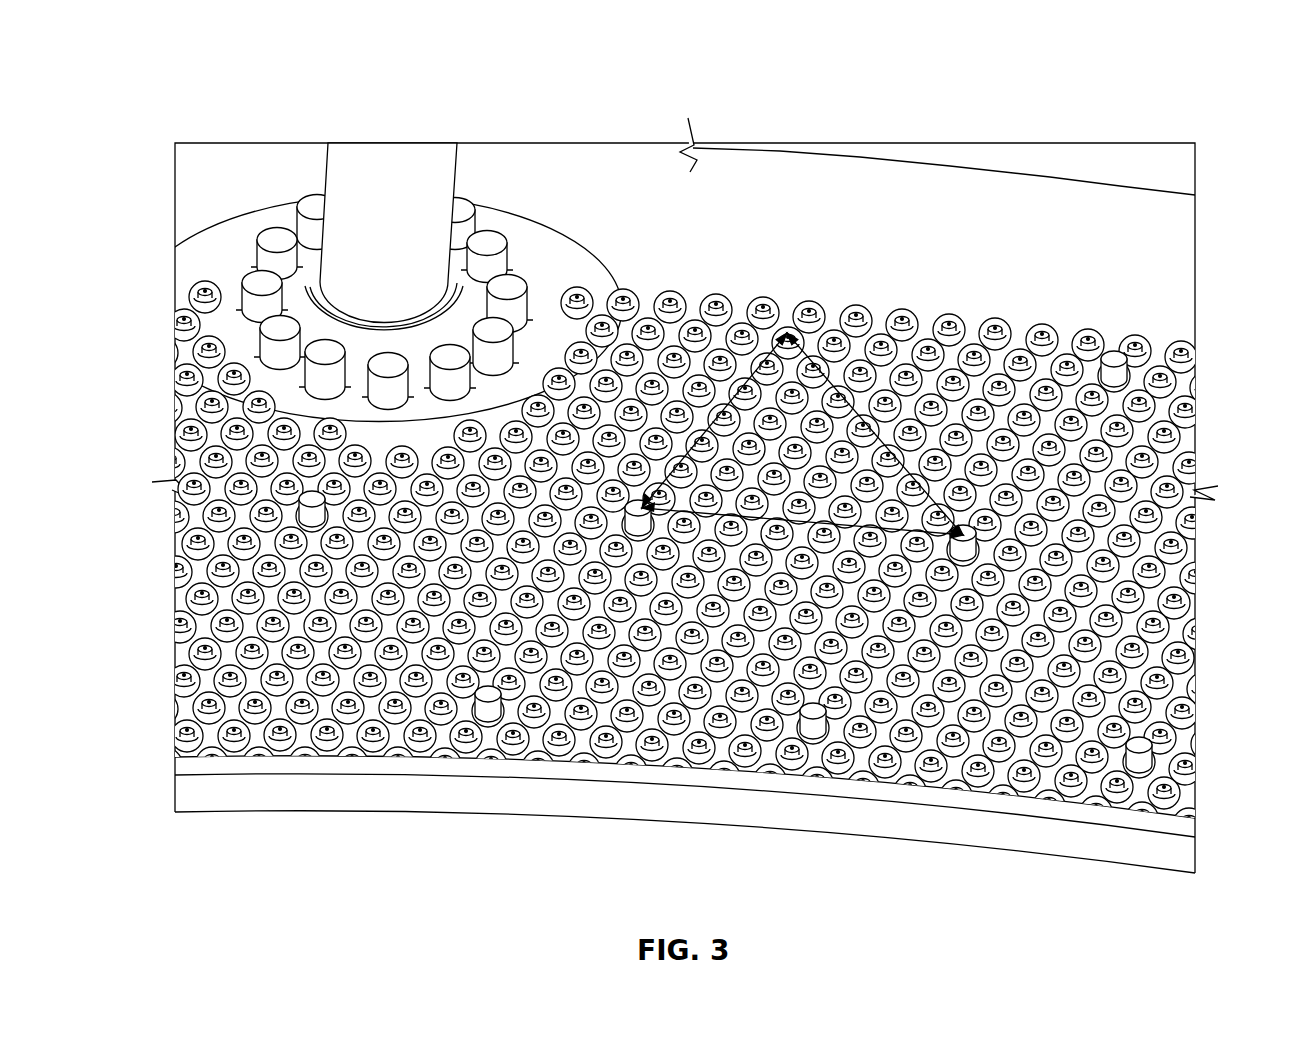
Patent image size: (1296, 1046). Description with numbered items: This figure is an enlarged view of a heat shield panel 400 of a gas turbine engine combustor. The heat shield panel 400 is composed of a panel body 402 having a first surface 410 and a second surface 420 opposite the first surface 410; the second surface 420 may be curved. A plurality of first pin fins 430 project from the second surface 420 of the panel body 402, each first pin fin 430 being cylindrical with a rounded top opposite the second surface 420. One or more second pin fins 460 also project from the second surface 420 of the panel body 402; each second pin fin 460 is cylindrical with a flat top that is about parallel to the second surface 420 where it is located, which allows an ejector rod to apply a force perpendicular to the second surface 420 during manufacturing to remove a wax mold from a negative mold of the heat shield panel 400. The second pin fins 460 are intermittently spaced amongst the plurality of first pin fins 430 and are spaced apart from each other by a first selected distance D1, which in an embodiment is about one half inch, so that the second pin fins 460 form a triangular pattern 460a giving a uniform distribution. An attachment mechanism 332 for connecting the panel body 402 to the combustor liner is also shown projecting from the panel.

The heat shield panel 400 is at (176, 73).
The attachment mechanism 332 is at (403, 153).
The second surface 420 is at (658, 178).
The panel body 402 is at (1170, 292).
The triangular pattern 460a is at (905, 470).
The second pin fins 460 is at (793, 328).
The first pin fins 430 is at (910, 314).
The first surface 410 is at (597, 832).
The first selected distance D1 is at (700, 430).